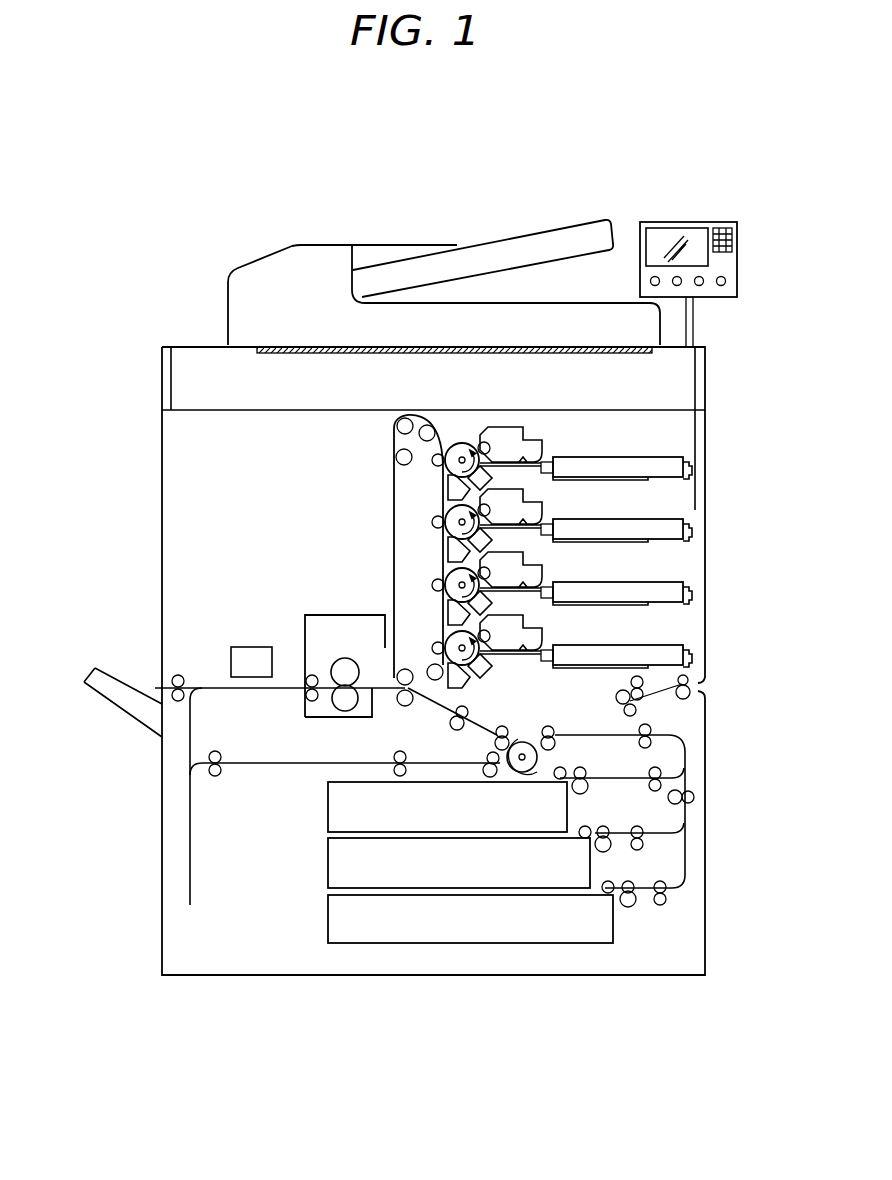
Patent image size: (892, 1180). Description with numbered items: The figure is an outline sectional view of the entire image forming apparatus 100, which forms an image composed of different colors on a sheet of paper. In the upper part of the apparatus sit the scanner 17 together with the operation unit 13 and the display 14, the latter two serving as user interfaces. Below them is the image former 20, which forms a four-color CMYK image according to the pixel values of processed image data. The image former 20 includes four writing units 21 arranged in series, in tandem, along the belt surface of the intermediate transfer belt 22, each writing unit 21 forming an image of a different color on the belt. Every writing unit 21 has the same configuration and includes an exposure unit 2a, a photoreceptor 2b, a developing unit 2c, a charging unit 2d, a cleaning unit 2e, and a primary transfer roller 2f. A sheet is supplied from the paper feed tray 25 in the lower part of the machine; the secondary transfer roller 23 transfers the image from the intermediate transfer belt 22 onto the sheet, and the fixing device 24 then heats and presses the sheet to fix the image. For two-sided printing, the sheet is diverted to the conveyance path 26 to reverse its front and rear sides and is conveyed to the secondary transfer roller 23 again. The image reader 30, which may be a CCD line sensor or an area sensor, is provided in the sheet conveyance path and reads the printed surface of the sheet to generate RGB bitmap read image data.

The image forming apparatus 100 is at (500, 139).
The scanner 17 is at (218, 385).
The display 14 is at (665, 226).
The operation unit 13 is at (737, 253).
The image former 20 is at (531, 527).
The intermediate transfer belt 22 is at (393, 472).
The photoreceptor 2b is at (461, 443).
The developing unit 2c is at (542, 432).
The exposure unit 2a is at (605, 457).
The charging unit 2d is at (495, 478).
The cleaning unit 2e is at (447, 490).
The primary transfer roller 2f is at (436, 464).
The writing unit 21 is at (716, 464).
The fixing device 24 is at (325, 616).
The image reader 30 is at (247, 646).
The secondary transfer roller 23 is at (402, 706).
The conveyance path 26 is at (202, 855).
The paper feed tray 25 is at (416, 960).